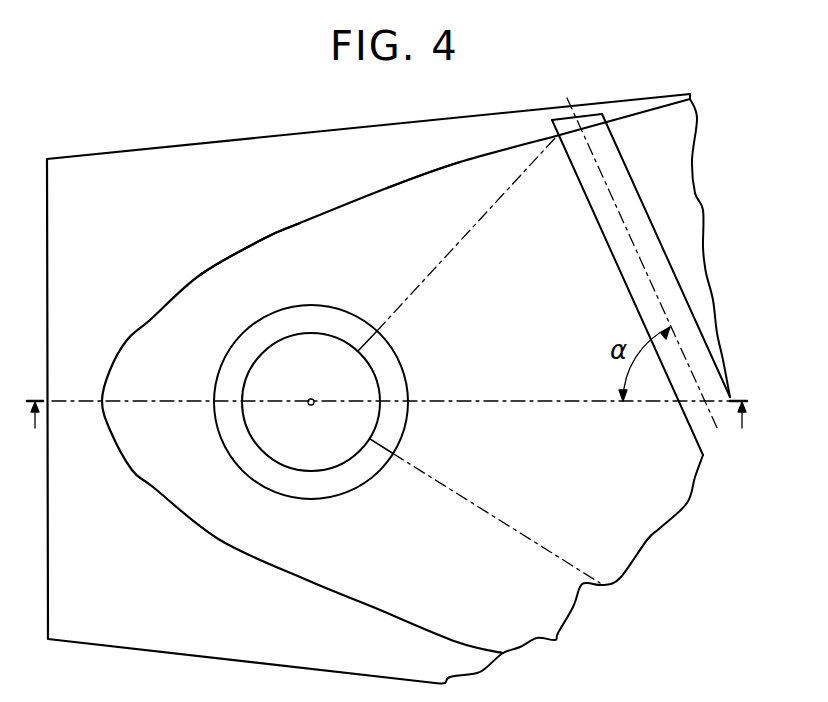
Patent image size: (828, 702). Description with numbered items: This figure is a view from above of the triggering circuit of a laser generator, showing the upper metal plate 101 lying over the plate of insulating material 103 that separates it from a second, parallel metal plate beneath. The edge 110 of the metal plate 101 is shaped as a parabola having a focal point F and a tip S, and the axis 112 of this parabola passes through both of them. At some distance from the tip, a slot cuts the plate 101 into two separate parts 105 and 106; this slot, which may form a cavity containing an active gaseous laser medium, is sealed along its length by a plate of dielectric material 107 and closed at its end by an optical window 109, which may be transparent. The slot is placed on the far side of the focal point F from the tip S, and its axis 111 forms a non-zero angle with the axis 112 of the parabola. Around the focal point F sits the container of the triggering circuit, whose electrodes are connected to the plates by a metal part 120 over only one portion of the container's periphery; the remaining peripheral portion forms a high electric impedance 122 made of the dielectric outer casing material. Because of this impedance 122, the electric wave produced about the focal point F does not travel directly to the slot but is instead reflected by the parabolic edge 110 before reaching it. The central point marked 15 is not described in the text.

The metal plate 101 is at (167, 313).
The plate of insulating material 103 is at (78, 180).
The part of the plate 105 is at (400, 247).
The part of the plate 106 is at (668, 177).
The plate of dielectric material 107 is at (662, 257).
The optical window 109 is at (588, 122).
The edge of the plate 110 is at (265, 236).
The axis of the slot 111 is at (632, 243).
The axis of the parabola 112 is at (490, 400).
The metal part 120 is at (233, 372).
The high electric impedance 122 is at (390, 375).
The center point 15 is at (313, 404).
The tip of the parabola S is at (101, 400).
The focal point F is at (310, 400).